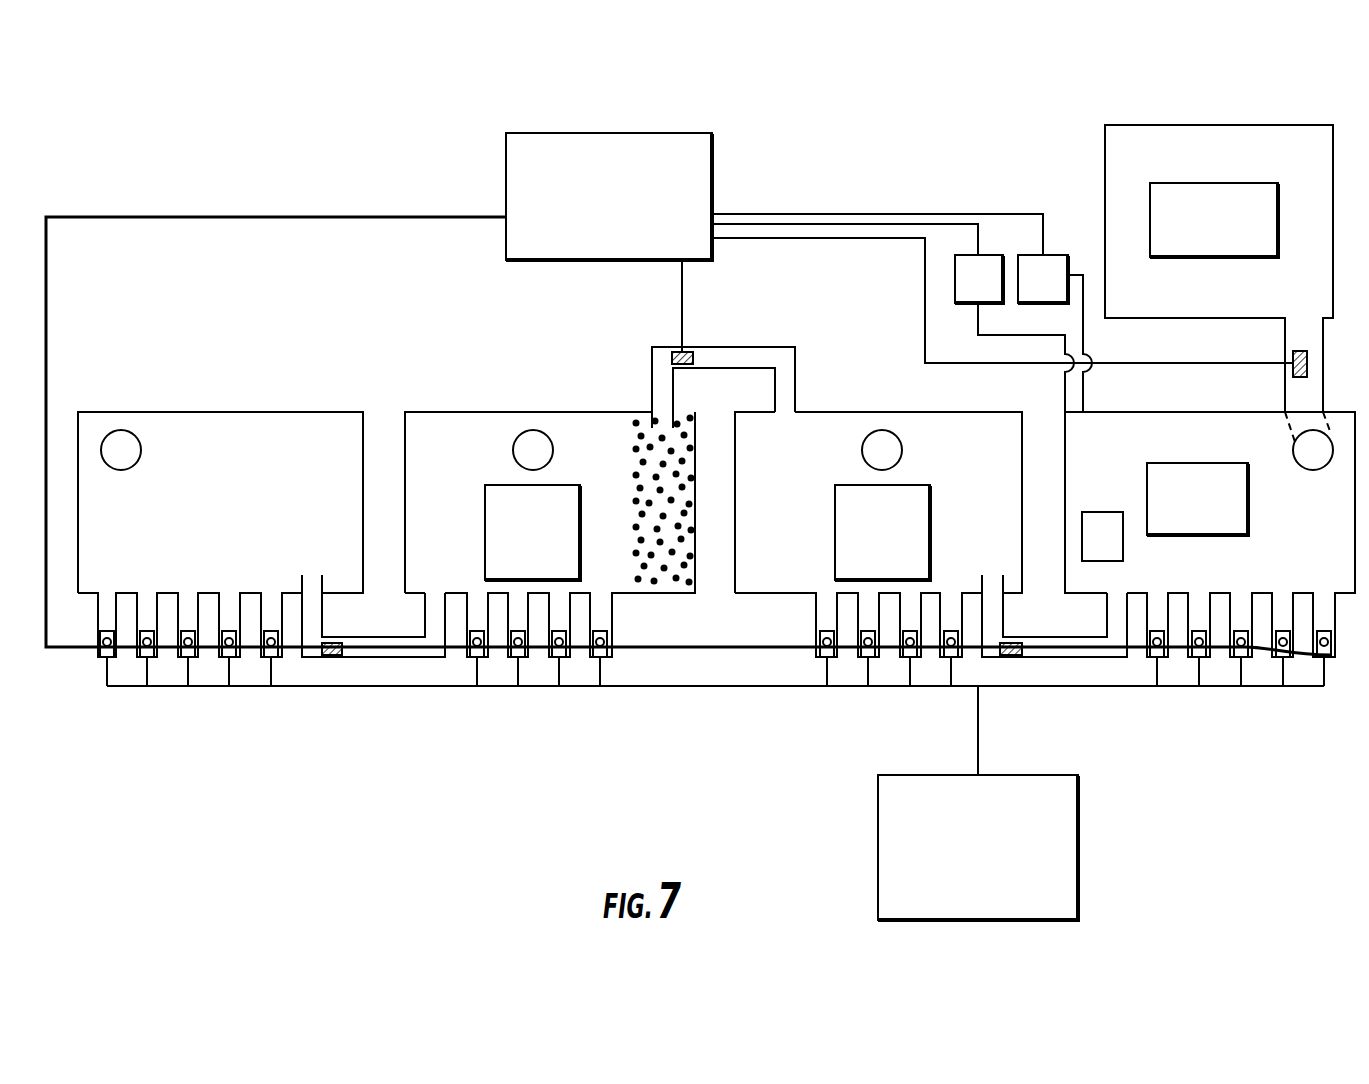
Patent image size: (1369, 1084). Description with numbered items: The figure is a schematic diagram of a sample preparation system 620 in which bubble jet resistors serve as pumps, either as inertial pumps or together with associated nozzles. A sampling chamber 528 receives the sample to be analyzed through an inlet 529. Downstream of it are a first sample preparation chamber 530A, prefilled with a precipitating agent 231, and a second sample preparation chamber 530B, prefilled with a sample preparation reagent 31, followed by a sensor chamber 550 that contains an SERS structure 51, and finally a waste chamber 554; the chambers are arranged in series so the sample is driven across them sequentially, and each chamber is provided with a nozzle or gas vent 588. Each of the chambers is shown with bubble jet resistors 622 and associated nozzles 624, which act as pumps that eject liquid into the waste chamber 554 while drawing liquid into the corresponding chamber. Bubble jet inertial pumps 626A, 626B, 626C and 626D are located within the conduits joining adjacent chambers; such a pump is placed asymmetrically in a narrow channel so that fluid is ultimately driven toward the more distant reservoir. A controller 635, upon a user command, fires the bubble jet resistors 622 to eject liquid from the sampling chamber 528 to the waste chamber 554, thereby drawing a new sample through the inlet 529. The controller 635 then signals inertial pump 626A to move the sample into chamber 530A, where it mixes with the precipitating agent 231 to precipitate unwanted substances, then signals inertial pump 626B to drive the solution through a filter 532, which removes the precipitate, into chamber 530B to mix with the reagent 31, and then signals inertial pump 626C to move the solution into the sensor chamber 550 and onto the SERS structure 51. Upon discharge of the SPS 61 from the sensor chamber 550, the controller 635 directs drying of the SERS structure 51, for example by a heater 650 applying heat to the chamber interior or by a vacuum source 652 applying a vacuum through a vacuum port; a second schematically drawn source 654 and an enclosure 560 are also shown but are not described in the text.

The sample preparation system 620 is at (247, 131).
The controller 635 is at (713, 190).
The vacuum source 652 is at (990, 255).
The vacuum source 654 is at (1057, 257).
The sample preparation station 560 is at (1232, 125).
The SPS 61 is at (1150, 207).
The bubble jet inertial pump 626D is at (1301, 351).
The inlet 529 is at (140, 437).
The sampling chamber 528 is at (277, 412).
The nozzle 624 is at (97, 634).
The bubble jet resistor 622 is at (96, 646).
The bubble jet inertial pump 626A is at (325, 655).
The sample preparation chamber 530A is at (480, 412).
The precipitating agent 231 is at (485, 508).
The gas vent 588 is at (533, 430).
The bubble jet inertial pump 626B is at (688, 351).
The filter 532 is at (652, 582).
The sample preparation chamber 530B is at (858, 412).
The sample preparation reagent 31 is at (932, 508).
The bubble jet inertial pump 626C is at (1010, 655).
The sensor chamber 550 is at (1348, 593).
The SERS structure 51 is at (1145, 487).
The heater 650 is at (1082, 540).
The waste chamber 554 is at (1080, 876).